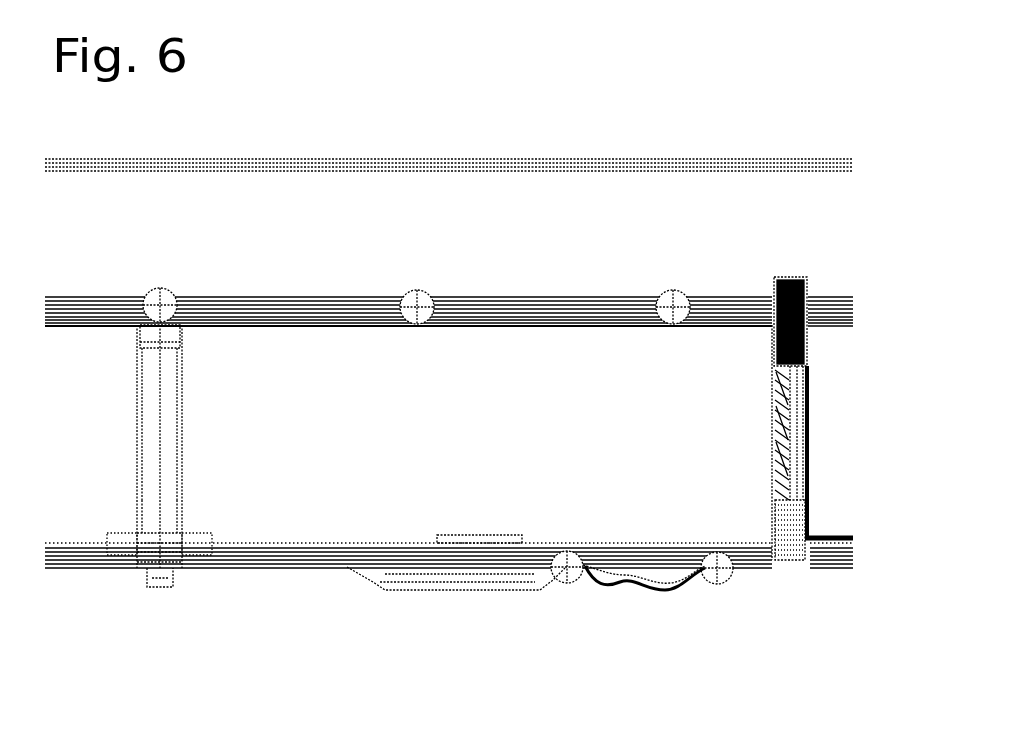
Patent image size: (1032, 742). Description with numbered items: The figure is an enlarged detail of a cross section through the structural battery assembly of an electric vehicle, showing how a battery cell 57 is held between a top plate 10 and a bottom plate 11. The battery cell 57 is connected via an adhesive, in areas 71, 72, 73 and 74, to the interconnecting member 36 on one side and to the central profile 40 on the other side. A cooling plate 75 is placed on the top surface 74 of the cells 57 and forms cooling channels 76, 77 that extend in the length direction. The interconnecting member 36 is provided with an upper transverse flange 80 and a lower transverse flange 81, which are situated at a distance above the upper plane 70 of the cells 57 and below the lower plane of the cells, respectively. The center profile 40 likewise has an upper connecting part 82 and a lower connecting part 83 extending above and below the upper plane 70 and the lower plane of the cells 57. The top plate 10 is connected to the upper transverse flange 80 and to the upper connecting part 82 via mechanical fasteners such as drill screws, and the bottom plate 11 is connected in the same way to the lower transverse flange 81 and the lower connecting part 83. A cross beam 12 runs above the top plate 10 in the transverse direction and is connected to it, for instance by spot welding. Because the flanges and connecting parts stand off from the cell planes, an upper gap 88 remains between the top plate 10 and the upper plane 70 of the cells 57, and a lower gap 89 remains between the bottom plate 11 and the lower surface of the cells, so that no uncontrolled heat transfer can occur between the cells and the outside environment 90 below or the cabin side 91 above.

The cabin side 91 is at (421, 143).
The cross beam 12 is at (803, 190).
The top plate 10 is at (711, 304).
The upper plane 70 is at (547, 324).
The cooling channel 77 is at (240, 324).
The upper gap 88 is at (261, 324).
The cooling plate 75 is at (305, 324).
The cooling channel 76 is at (368, 324).
The upper connecting part 82 is at (140, 324).
The adhesive connection area 71 is at (184, 344).
The central profile 40 is at (153, 500).
The adhesive connection area 74 is at (183, 522).
The lower connecting part 83 is at (185, 565).
The bottom plate 11 is at (462, 590).
The outside environment 90 is at (616, 668).
The lower gap 89 is at (503, 578).
The battery cell 57 is at (403, 510).
The adhesive connection area 72 is at (772, 337).
The interconnecting member 36 is at (797, 452).
The adhesive connection area 73 is at (773, 530).
The upper transverse flange 80 is at (823, 316).
The lower transverse flange 81 is at (820, 561).